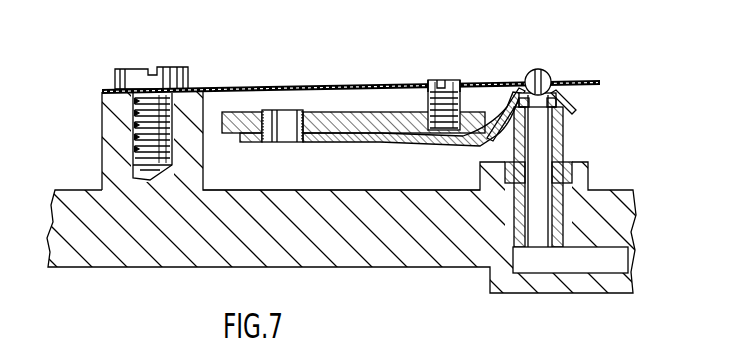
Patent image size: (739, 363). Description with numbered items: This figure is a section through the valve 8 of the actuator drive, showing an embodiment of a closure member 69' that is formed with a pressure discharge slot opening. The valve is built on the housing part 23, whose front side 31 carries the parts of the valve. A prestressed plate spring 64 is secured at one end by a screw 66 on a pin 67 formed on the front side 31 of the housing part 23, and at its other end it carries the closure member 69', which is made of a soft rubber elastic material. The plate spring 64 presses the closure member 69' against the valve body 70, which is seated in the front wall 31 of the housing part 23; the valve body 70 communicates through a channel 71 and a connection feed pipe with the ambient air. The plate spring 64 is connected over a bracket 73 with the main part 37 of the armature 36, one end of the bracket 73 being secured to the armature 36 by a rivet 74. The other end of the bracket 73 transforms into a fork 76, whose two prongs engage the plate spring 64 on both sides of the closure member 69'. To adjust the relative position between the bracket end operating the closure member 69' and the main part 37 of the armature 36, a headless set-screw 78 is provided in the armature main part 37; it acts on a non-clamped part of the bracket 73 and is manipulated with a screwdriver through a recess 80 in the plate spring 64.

The valve 8 is at (249, 62).
The first housing part 23 is at (82, 200).
The front side 31 is at (312, 192).
The armature 36 is at (318, 99).
The main part 37 is at (343, 120).
The plate spring 64 is at (222, 89).
The screw 66 is at (167, 71).
The pin 67 is at (112, 138).
The closure member 69' is at (568, 147).
The valve body 70 is at (561, 136).
The channel 71 is at (540, 262).
The bracket 73 is at (376, 136).
The rivet 74 is at (285, 117).
The fork 76 is at (513, 96).
The set-screw 78 is at (438, 81).
The recess 80 is at (424, 83).